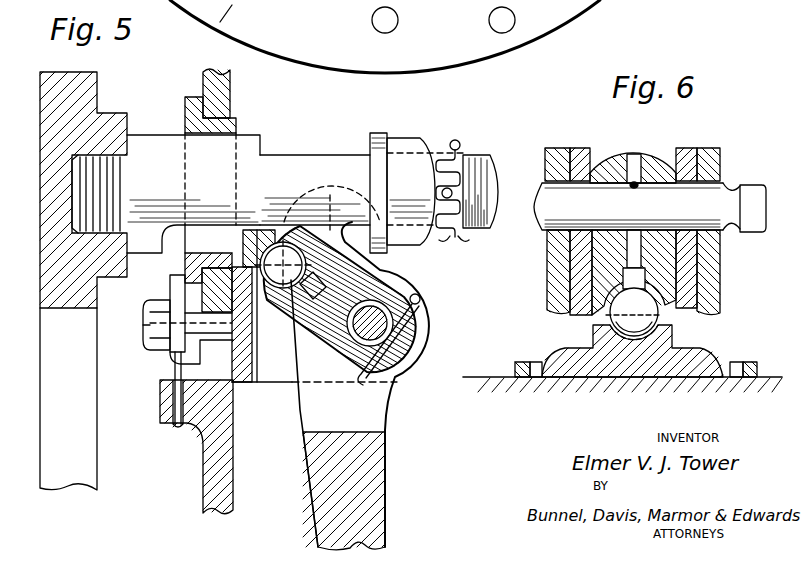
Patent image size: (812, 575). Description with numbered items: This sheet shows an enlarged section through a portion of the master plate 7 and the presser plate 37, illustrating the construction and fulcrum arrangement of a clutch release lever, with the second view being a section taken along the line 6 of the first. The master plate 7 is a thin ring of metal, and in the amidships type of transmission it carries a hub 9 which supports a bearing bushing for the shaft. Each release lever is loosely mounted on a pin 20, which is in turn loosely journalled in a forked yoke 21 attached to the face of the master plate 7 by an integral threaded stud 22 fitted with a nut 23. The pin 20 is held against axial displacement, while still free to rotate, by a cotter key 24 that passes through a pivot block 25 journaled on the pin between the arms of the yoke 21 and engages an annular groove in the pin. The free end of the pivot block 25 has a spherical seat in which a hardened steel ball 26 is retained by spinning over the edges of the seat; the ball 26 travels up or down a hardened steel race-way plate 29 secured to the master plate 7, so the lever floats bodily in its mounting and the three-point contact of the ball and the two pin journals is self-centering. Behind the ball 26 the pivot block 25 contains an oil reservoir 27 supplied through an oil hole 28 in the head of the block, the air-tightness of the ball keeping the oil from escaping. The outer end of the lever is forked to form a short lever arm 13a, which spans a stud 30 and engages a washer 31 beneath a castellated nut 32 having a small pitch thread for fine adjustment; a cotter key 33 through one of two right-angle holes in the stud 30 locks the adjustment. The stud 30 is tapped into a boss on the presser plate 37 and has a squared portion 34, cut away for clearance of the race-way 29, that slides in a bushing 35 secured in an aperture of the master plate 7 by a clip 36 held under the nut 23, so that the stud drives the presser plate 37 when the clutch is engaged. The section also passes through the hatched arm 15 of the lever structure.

In FIG. 5, the section line 6 is at (232, 234).
In FIG. 5, the master plate 7 is at (228, 86).
In FIG. 6, the master plate 7 is at (592, 381).
In FIG. 5, the hub 9 is at (230, 500).
In FIG. 5, the short lever arm 13a is at (330, 174).
In FIG. 6, the short lever arm 13a is at (580, 147).
In FIG. 5, the arm 15 is at (376, 483).
In FIG. 5, the pin 20 is at (423, 317).
In FIG. 6, the pin 20 is at (708, 197).
In FIG. 5, the forked yoke 21 is at (310, 286).
In FIG. 6, the forked yoke 21 is at (548, 150).
In FIG. 5, the threaded stud 22 is at (173, 357).
In FIG. 5, the nut 23 is at (160, 343).
In FIG. 5, the cotter key 24 is at (420, 297).
In FIG. 6, the cotter key 24 is at (637, 181).
In FIG. 5, the pivot block 25 is at (387, 290).
In FIG. 6, the pivot block 25 is at (665, 290).
In FIG. 5, the ball 26 is at (282, 282).
In FIG. 6, the ball 26 is at (608, 318).
In FIG. 5, the oil reservoir 27 is at (278, 383).
In FIG. 6, the oil reservoir 27 is at (643, 277).
In FIG. 5, the oil hole 28 is at (423, 343).
In FIG. 6, the oil hole 28 is at (632, 158).
In FIG. 5, the race-way plate 29 is at (272, 220).
In FIG. 6, the race-way plate 29 is at (593, 357).
In FIG. 5, the stud 30 is at (310, 173).
In FIG. 5, the washer 31 is at (378, 137).
In FIG. 5, the castellated nut 32 is at (413, 147).
In FIG. 5, the cotter key 33 is at (461, 143).
In FIG. 5, the squared portion 34 is at (250, 132).
In FIG. 5, the bushing 35 is at (190, 97).
In FIG. 5, the clip 36 is at (175, 290).
In FIG. 5, the presser plate 37 is at (85, 80).